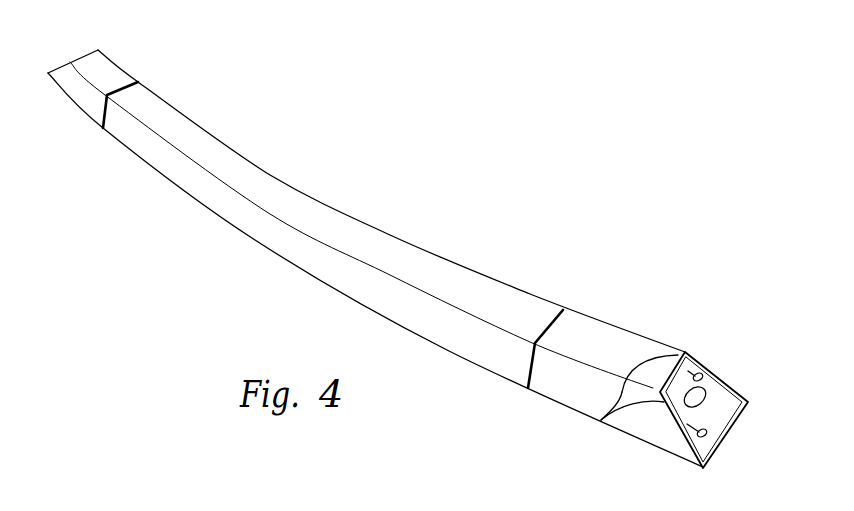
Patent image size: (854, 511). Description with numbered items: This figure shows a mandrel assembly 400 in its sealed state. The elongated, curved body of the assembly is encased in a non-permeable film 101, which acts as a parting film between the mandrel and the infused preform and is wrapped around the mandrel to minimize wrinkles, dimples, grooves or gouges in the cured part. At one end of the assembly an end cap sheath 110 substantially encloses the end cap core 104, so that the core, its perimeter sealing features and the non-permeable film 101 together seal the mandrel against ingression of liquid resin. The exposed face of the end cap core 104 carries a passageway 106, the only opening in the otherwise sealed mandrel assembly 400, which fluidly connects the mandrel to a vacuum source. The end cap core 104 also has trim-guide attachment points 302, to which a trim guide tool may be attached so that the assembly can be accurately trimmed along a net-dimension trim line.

The mandrel assembly 400 is at (527, 85).
The non-permeable film 101 is at (513, 303).
The end cap sheath 110 is at (98, 65).
The end cap core 104 is at (717, 418).
The passageway 106 is at (705, 395).
The trim-guide attachment points 302 is at (660, 403).